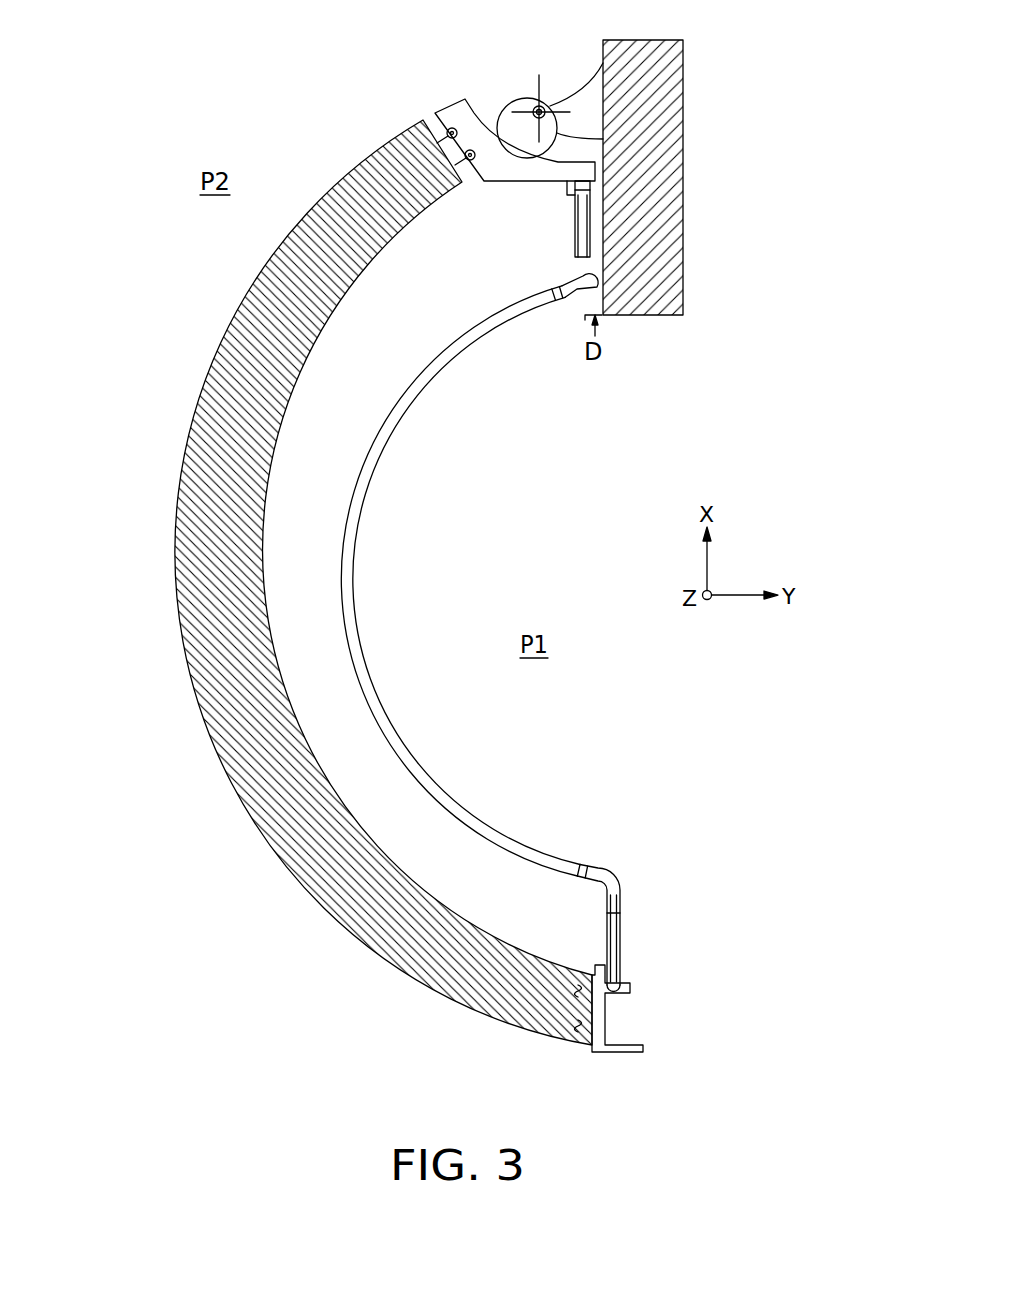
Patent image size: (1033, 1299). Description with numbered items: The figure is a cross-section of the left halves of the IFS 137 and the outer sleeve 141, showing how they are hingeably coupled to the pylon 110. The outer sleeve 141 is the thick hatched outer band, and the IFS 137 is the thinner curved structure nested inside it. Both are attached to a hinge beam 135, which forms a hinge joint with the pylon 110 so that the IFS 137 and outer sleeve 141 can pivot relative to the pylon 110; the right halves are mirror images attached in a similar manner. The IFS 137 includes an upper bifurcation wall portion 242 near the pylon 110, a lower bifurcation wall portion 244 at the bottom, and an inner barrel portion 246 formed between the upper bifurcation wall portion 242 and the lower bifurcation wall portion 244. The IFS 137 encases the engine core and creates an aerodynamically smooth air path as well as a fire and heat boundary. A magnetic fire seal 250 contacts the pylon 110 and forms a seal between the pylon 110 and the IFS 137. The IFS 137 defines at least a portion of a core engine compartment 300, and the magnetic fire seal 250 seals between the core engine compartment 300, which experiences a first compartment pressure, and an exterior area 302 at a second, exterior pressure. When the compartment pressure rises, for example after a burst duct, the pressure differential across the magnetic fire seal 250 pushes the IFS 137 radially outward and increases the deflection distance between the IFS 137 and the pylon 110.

The pylon 110 is at (665, 202).
The hinge beam 135 is at (472, 127).
The IFS 137 is at (355, 543).
The outer sleeve 141 is at (220, 510).
The upper bifurcation wall portion 242 is at (575, 213).
The lower bifurcation wall portion 244 is at (612, 922).
The inner barrel portion 246 is at (440, 363).
The magnetic fire seal 250 is at (592, 272).
The core engine compartment 300 is at (600, 523).
The area exterior to core engine compartment 302 is at (560, 42).